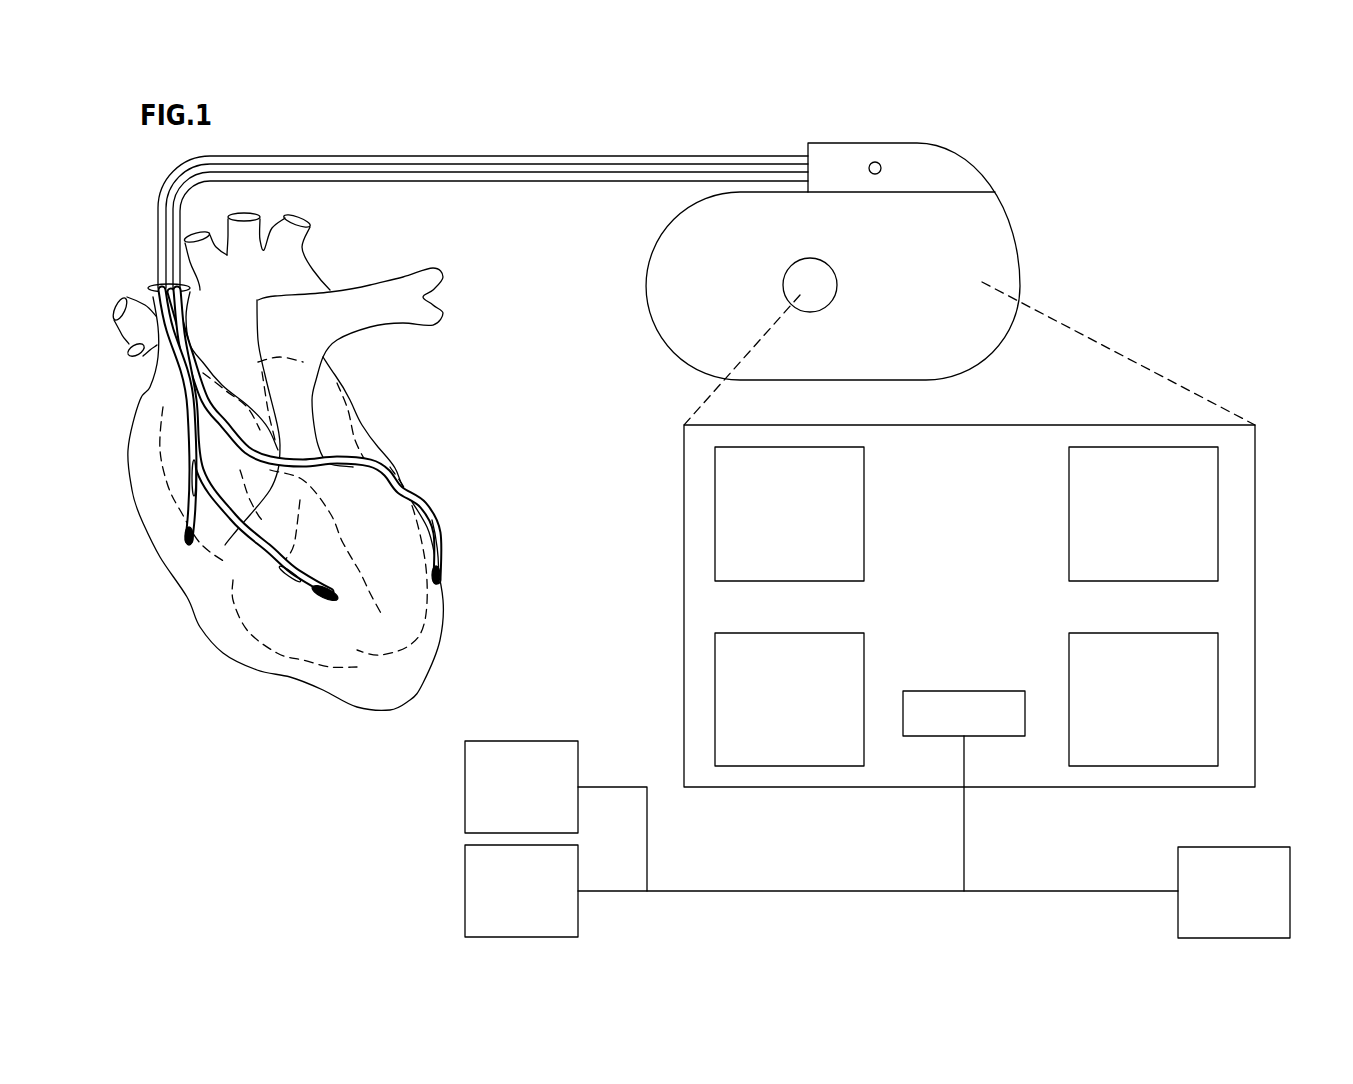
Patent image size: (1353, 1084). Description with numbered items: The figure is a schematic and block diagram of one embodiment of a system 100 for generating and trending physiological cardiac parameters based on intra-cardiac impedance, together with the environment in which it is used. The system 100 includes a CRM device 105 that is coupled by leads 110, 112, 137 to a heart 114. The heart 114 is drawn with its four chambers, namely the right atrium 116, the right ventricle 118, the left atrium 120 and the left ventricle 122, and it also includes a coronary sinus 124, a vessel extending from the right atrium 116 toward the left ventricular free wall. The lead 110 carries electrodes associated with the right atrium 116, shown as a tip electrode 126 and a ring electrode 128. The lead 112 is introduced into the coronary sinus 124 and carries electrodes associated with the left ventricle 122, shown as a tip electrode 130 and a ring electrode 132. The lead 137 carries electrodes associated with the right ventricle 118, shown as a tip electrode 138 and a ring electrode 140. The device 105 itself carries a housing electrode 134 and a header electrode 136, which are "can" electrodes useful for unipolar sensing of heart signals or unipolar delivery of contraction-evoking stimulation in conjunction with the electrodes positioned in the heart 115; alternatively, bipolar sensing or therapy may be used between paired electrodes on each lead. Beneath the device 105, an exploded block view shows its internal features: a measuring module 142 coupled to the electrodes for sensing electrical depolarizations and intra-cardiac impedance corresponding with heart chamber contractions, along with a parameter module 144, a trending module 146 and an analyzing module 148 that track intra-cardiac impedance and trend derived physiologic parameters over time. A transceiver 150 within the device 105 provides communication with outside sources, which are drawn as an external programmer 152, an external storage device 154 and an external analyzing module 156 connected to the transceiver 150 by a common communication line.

The system 100 is at (657, 137).
The CRM device 105 is at (1015, 227).
The lead 110 is at (443, 156).
The lead 112 is at (473, 181).
The heart 114 is at (312, 690).
The heart 115 is at (200, 603).
The right atrium 116 is at (190, 490).
The right ventricle 118 is at (280, 637).
The left atrium 120 is at (337, 397).
The left ventricle 122 is at (407, 640).
The coronary sinus 124 is at (287, 457).
The tip electrode 126 is at (187, 547).
The ring electrode 128 is at (192, 482).
The tip electrode 130 is at (438, 603).
The ring electrode 132 is at (432, 543).
The housing electrode 134 is at (825, 293).
The header electrode 136 is at (882, 166).
The lead 137 is at (307, 572).
The tip electrode 138 is at (340, 590).
The ring electrode 140 is at (283, 577).
The measuring module 142 is at (715, 479).
The parameter module 144 is at (715, 699).
The trending module 146 is at (1218, 492).
The analyzing module 148 is at (1218, 701).
The transceiver 150 is at (964, 690).
The external programmer 152 is at (1290, 890).
The external storage device 154 is at (465, 891).
The external analyzing module 156 is at (465, 785).